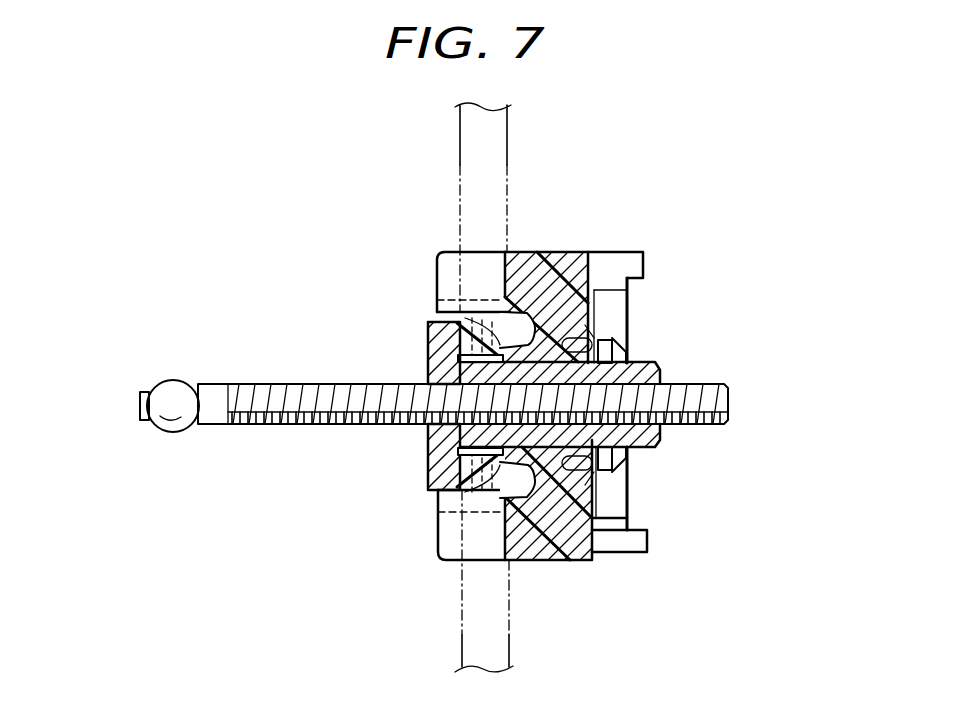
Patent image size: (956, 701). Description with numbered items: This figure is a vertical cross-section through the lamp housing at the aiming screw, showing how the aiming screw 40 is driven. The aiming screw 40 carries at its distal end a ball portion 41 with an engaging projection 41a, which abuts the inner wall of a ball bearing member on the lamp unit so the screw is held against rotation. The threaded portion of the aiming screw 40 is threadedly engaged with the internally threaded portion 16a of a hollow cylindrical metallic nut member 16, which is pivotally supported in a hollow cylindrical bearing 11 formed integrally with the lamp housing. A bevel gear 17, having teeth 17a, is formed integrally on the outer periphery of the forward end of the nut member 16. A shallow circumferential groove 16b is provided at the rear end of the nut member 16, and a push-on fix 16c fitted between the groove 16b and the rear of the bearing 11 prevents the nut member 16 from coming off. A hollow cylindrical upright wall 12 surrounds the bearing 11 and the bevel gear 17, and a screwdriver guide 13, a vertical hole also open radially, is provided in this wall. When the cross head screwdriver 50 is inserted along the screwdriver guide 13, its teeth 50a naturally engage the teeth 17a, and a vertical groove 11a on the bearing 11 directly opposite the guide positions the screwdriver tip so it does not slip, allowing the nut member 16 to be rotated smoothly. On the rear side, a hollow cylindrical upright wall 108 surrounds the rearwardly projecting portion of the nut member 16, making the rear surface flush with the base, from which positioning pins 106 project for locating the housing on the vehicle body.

The bearing 11 is at (516, 532).
The vertical groove 11a is at (462, 342).
The upright wall 12 is at (445, 298).
The screwdriver guide 13 is at (493, 273).
The nut member 16 is at (558, 532).
The internally threaded portion 16a is at (413, 426).
The groove 16b is at (628, 351).
The push-on fix 16c is at (620, 460).
The bevel gear 17 is at (448, 325).
The teeth 17a is at (512, 318).
The aiming screw 40 is at (263, 426).
The ball portion 41 is at (178, 382).
The engaging projection 41a is at (145, 392).
The cross head screwdriver 50 is at (507, 127).
The teeth 50a is at (567, 312).
The positioning pins 106 is at (647, 266).
The upright wall 108 is at (629, 500).